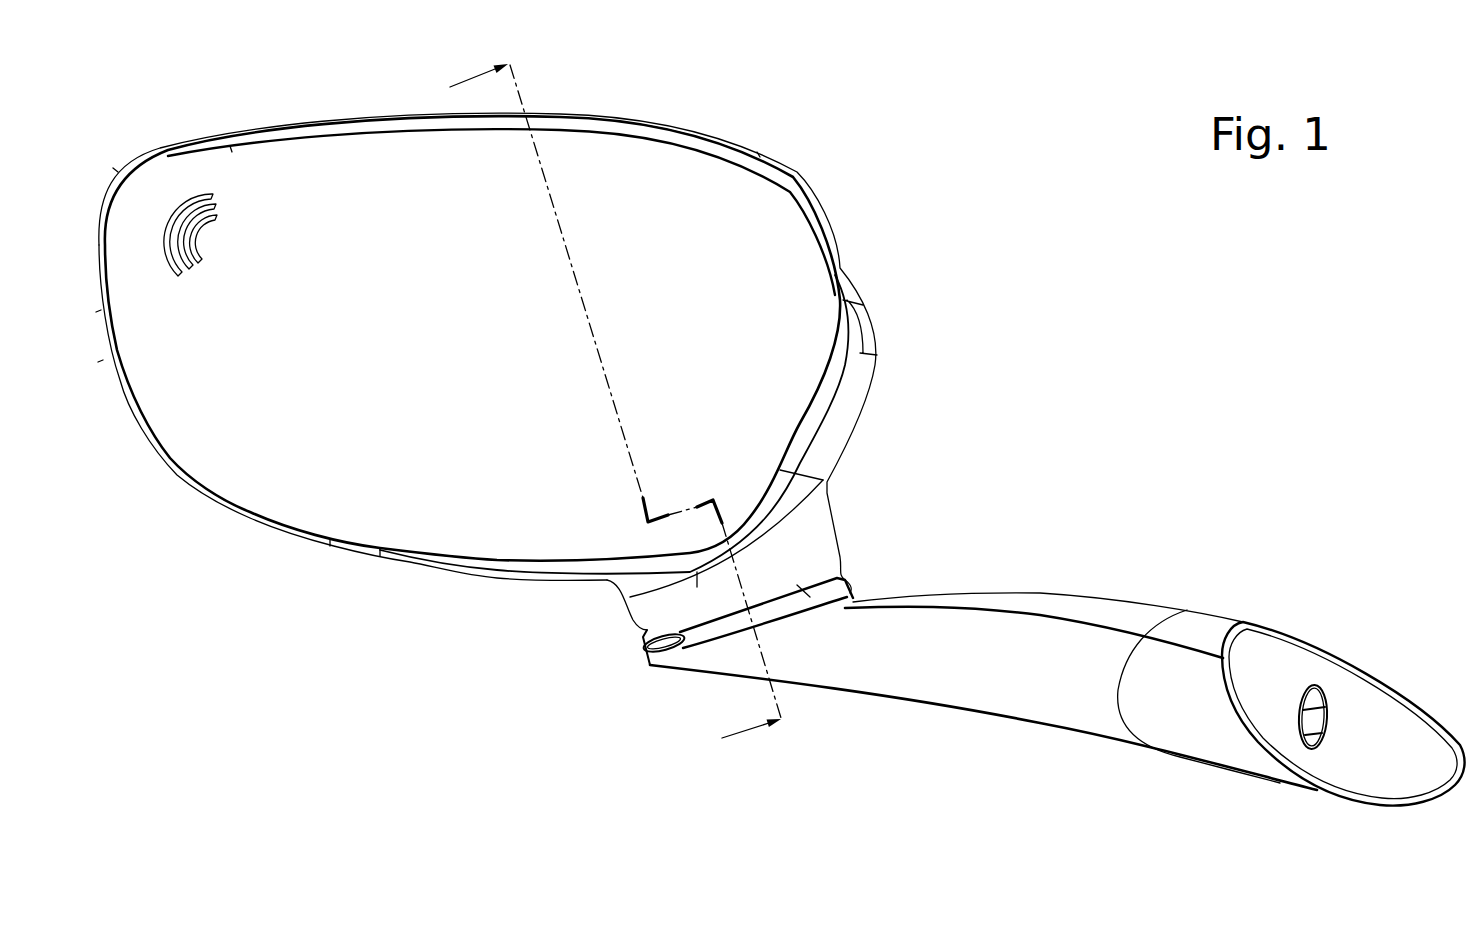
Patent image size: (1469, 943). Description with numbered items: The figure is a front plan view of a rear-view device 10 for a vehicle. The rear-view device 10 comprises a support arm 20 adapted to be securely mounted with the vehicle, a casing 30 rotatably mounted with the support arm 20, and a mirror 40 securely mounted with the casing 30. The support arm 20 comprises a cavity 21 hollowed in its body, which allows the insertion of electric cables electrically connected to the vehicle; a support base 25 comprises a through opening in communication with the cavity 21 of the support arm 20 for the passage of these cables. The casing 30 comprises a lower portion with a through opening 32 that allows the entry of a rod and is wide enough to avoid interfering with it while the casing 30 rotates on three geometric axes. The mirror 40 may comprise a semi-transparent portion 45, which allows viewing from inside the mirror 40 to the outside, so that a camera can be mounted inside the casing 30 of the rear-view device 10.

The rear-view device 10 is at (1093, 423).
The support arm 20 is at (1040, 641).
The cavity 21 is at (1313, 718).
The support base 25 is at (843, 590).
The casing 30 is at (813, 163).
The through opening 32 is at (846, 570).
The mirror 40 is at (690, 200).
The semi-transparent portion 45 is at (193, 197).